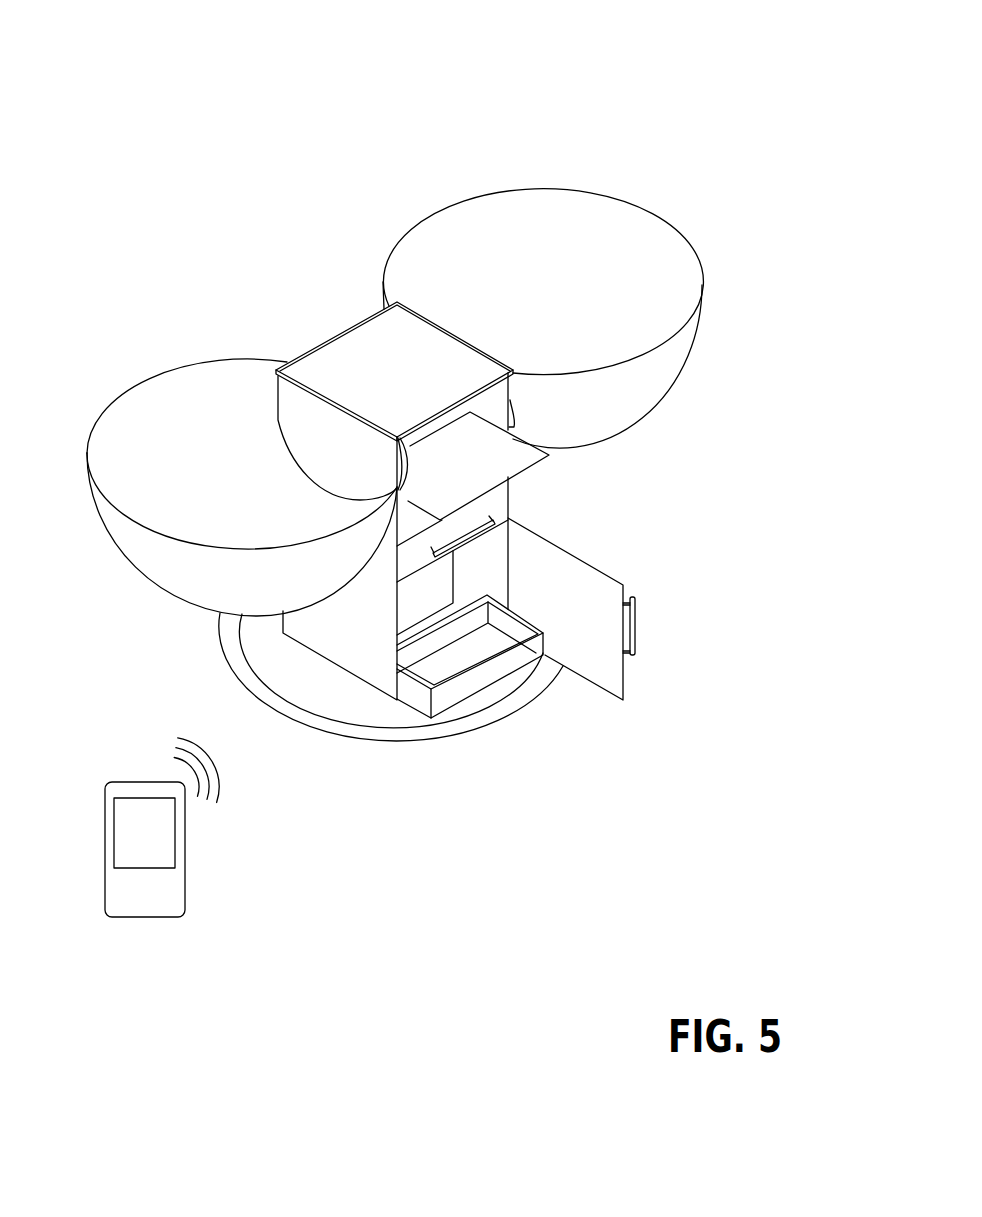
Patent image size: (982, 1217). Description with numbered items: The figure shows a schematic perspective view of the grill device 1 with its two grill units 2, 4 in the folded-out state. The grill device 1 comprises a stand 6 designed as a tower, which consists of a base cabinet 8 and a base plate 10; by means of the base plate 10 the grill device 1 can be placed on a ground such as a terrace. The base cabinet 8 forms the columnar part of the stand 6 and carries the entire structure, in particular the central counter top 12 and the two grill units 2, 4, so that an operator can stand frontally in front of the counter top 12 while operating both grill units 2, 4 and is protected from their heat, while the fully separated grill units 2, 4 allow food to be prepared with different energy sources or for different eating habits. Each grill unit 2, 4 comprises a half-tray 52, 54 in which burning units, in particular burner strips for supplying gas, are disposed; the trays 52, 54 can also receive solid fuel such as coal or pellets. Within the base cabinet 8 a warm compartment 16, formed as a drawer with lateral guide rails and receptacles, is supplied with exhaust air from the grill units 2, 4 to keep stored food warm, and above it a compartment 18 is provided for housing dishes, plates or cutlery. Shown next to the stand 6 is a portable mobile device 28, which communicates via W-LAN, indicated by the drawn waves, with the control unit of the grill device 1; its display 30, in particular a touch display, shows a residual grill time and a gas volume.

The grill device 1 is at (229, 103).
The grill unit 2 is at (163, 354).
The grill unit 4 is at (570, 179).
The stand 6 is at (306, 691).
The base cabinet 8 is at (364, 663).
The base plate 10 is at (404, 756).
The counter top 12 is at (356, 351).
The warm compartment 16 is at (503, 508).
The compartment 18 is at (482, 440).
The portable mobile device 28 is at (160, 943).
The display 30 is at (169, 860).
The half-tray 52 is at (162, 575).
The half-tray 54 is at (648, 378).